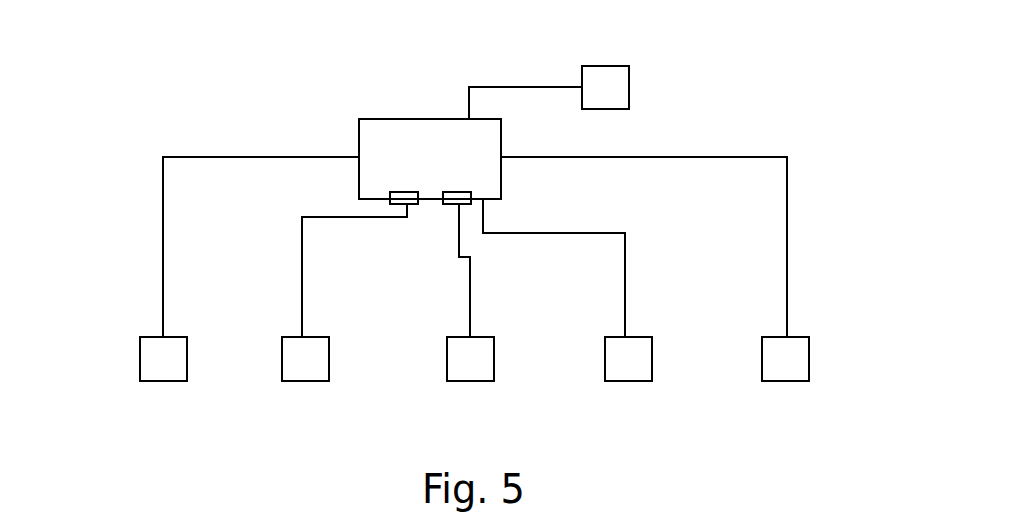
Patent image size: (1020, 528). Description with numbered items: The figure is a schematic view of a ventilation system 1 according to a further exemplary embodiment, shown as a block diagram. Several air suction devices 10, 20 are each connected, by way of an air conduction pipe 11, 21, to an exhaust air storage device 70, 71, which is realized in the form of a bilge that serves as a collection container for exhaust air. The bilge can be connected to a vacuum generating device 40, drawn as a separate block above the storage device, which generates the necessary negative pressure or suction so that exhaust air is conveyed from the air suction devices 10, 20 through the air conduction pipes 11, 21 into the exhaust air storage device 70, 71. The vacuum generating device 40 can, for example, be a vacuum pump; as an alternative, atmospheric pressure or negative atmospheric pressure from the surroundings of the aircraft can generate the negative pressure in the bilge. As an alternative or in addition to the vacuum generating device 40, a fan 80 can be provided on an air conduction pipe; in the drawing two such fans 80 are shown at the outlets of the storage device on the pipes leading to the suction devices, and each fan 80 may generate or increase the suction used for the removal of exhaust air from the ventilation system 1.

The sensor system 1 is at (219, 120).
The air suction device 10 is at (503, 387).
The air suction device 20 is at (158, 366).
The air conduction pipe 11 is at (422, 247).
The air conduction pipe 21 is at (162, 168).
The exhaust air storage device 70 is at (421, 127).
The evaluation unit 71 is at (388, 137).
The fan 80 is at (410, 204).
The vacuum generating device 40 is at (612, 87).